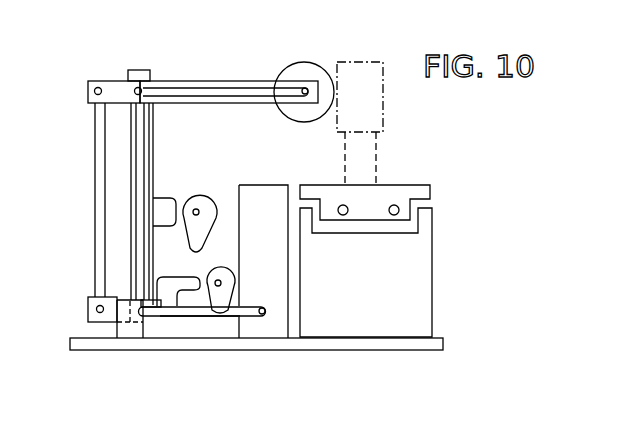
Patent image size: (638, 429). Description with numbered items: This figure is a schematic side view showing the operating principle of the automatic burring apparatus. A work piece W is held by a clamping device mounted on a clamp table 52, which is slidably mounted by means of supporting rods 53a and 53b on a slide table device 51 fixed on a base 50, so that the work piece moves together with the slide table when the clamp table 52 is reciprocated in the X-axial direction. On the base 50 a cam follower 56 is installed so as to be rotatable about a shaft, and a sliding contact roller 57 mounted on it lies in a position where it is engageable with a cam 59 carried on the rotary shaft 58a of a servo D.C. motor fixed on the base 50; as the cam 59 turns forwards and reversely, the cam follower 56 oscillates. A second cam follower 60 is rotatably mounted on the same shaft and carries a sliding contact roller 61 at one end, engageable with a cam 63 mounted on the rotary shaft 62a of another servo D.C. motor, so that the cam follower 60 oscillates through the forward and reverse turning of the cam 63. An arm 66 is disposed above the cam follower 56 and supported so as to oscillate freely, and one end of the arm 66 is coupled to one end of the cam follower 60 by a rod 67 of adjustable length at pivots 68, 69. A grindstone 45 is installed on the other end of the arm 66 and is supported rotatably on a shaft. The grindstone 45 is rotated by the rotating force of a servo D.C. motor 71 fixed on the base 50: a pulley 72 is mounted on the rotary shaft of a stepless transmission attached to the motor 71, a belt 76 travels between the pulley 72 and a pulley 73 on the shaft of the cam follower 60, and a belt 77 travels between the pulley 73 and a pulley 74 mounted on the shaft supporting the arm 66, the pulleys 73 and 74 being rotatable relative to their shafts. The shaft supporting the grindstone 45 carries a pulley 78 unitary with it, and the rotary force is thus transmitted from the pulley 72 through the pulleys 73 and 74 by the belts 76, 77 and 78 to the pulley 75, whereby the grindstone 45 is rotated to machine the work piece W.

The grindstone 45 is at (323, 62).
The base 50 is at (372, 351).
The slide table device 51 is at (436, 302).
The clamp table 52 is at (418, 190).
The supporting rod 53a is at (400, 214).
The supporting rod 53b is at (343, 204).
The cam follower 56 is at (129, 189).
The sliding contact roller 57 is at (173, 197).
The rotary shaft 58a is at (208, 202).
The cam 59 is at (213, 213).
The cam follower 60 is at (112, 318).
The sliding contact roller 61 is at (188, 280).
The rotary shaft 62a is at (218, 279).
The cam 63 is at (231, 288).
The arm 66 is at (250, 79).
The rod 67 is at (92, 113).
The pivot 68 is at (88, 299).
The pivot 69 is at (99, 86).
The servo D.C. motor 71 is at (260, 318).
The pulley 72 is at (267, 317).
The pulley 73 is at (145, 316).
The pulley 74 is at (141, 86).
The pulley 75 is at (304, 87).
The belt 76 is at (183, 319).
The belt 77 is at (136, 135).
The pulley 78 is at (200, 79).
The work piece W is at (385, 75).